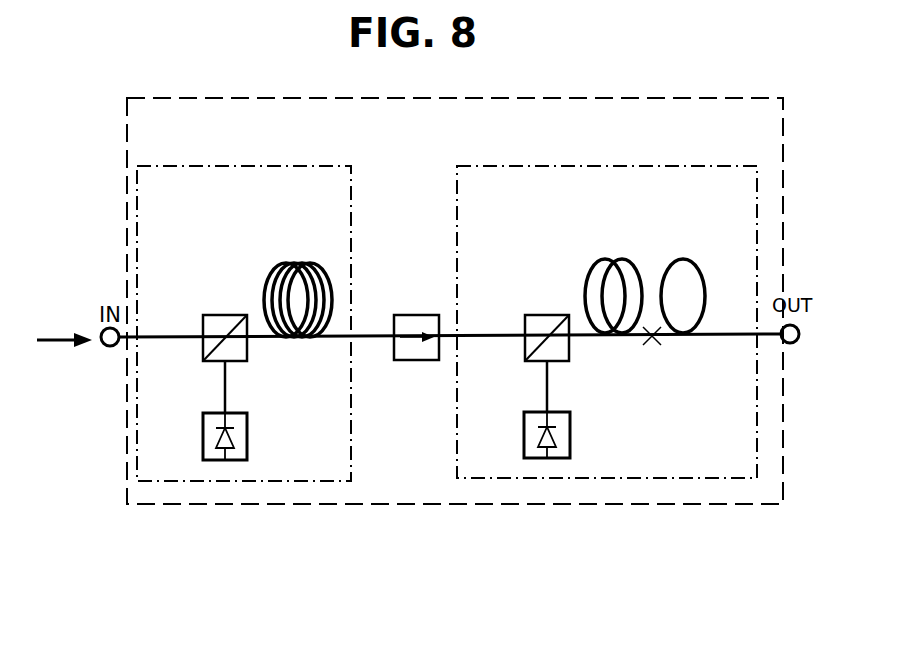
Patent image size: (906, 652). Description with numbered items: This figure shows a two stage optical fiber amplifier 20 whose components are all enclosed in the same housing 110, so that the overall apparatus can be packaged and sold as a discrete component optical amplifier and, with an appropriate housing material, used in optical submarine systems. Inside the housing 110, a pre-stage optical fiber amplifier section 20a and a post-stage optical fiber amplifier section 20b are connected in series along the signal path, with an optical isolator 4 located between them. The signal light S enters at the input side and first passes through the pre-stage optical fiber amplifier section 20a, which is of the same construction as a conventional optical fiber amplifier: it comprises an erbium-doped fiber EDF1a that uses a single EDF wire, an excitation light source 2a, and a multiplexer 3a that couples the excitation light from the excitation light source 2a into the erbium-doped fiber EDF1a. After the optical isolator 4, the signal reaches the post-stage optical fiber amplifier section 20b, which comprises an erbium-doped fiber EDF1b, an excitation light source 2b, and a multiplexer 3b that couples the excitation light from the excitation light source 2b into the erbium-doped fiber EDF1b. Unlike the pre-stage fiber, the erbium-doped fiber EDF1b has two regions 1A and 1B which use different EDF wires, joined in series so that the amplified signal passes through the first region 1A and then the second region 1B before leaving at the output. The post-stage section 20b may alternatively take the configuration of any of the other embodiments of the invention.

The housing 110 is at (152, 506).
The optical fiber amplifier 20 is at (118, 140).
The pre-stage optical fiber amplifier section 20a is at (318, 166).
The post-stage optical fiber amplifier section 20b is at (707, 164).
The EDF EDF1a is at (268, 268).
The EDF EDF1b is at (640, 260).
The region 1A is at (590, 272).
The region 1B is at (697, 272).
The multiplexer 3a is at (205, 316).
The multiplexer 3b is at (527, 316).
The excitation light source 2a is at (205, 413).
The excitation light source 2b is at (525, 416).
The optical isolator 4 is at (416, 316).
The signal light S is at (63, 331).